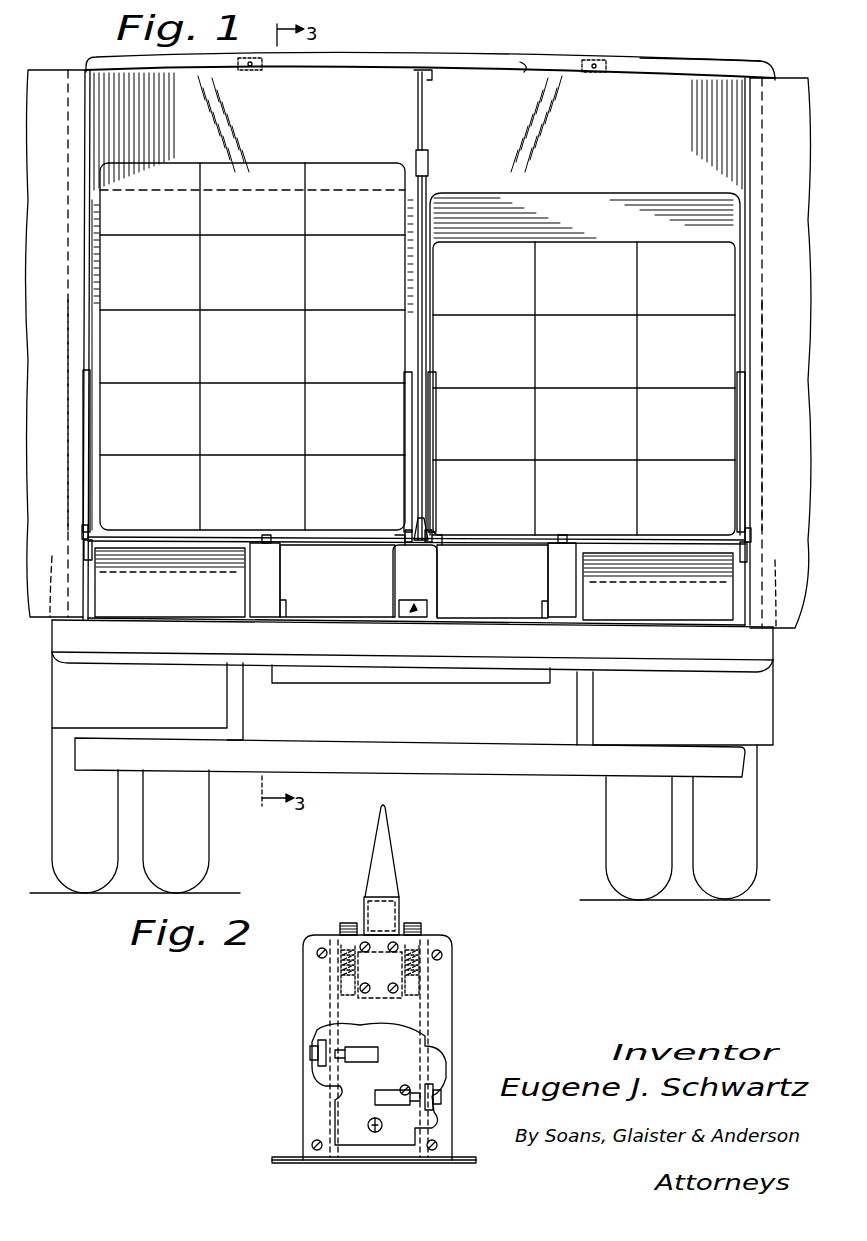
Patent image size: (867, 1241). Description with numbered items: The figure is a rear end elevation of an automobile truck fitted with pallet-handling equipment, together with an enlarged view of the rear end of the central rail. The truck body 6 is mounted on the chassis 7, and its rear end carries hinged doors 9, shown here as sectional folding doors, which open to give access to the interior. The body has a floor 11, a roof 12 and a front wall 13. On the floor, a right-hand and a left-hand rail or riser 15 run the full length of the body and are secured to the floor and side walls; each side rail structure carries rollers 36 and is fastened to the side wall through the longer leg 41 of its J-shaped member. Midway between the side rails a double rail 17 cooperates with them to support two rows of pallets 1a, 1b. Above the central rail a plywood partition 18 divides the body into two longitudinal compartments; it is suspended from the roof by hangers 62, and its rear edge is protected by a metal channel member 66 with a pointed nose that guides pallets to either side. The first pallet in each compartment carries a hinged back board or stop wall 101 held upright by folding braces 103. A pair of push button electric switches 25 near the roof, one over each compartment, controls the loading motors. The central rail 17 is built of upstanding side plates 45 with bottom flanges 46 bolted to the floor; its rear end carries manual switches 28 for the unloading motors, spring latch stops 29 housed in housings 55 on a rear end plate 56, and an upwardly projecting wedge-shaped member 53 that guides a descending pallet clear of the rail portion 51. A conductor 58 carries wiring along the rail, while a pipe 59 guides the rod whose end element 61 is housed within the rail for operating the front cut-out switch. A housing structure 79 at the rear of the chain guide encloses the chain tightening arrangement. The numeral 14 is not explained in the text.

In FIG. 1, the row of pallets 1a is at (314, 560).
In FIG. 1, the row of pallets 1b is at (516, 560).
In FIG. 1, the truck body 6 is at (700, 68).
In FIG. 1, the chassis 7 is at (682, 668).
In FIG. 1, the doors 9 is at (52, 98).
In FIG. 1, the floor 11 is at (498, 616).
In FIG. 1, the roof 12 is at (380, 58).
In FIG. 1, the front wall 13 is at (527, 70).
In FIG. 1, the side door track 14 is at (68, 368).
In FIG. 1, the rail or riser 15 is at (95, 597).
In FIG. 1, the double rail 17 is at (404, 577).
In FIG. 2, the double rail 17 is at (442, 942).
In FIG. 1, the partition 18 is at (427, 154).
In FIG. 1, the push button electric switches 25 is at (256, 72).
In FIG. 2, the manual switches 28 is at (318, 1056).
In FIG. 1, the mechanical stops 29 is at (392, 541).
In FIG. 2, the mechanical stops 29 is at (346, 924).
In FIG. 1, the rollers 36 is at (86, 551).
In FIG. 1, the longer leg 41 is at (84, 532).
In FIG. 2, the side plates 45 is at (318, 1080).
In FIG. 2, the bottom flanges 46 is at (275, 1157).
In FIG. 2, the rail portion 51 is at (400, 898).
In FIG. 1, the wedge-shaped member 53 is at (422, 520).
In FIG. 2, the wedge-shaped member 53 is at (392, 834).
In FIG. 2, the housings 55 is at (398, 1016).
In FIG. 2, the rear end plate 56 is at (418, 1010).
In FIG. 2, the conductor 58 is at (407, 1088).
In FIG. 2, the pipe or conduit 59 is at (368, 1126).
In FIG. 1, the clevis or end element 61 is at (405, 615).
In FIG. 2, the clevis or end element 61 is at (373, 1134).
In FIG. 1, the hangers 62 is at (426, 118).
In FIG. 1, the metal channel member 66 is at (427, 184).
In FIG. 1, the housing structure 79 is at (248, 599).
In FIG. 1, the back board or stop wall 101 is at (258, 186).
In FIG. 1, the folding braces 103 is at (96, 422).